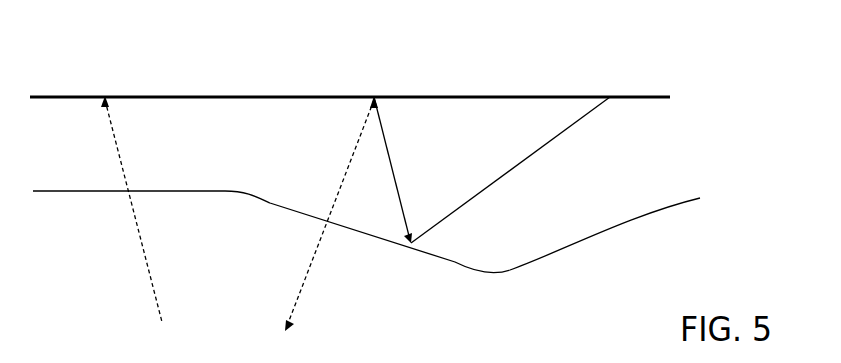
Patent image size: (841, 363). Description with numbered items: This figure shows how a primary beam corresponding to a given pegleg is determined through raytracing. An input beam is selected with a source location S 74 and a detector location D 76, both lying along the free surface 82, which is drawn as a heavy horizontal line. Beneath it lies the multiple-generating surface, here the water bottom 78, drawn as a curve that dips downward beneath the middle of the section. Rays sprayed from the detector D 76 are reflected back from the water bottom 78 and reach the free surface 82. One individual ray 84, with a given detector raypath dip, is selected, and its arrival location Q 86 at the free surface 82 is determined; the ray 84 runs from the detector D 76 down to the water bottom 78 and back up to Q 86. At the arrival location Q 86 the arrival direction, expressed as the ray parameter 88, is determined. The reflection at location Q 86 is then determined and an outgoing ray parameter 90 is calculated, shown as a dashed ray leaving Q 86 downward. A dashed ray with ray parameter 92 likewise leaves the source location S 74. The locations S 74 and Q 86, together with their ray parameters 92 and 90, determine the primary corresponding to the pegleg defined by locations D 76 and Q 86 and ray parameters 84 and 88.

The source location S 74 is at (115, 65).
The detector location D 76 is at (660, 68).
The water bottom 78 is at (82, 192).
The free surface 82 is at (502, 95).
The ray 84 is at (518, 162).
The arrival location Q 86 is at (408, 67).
The arrival ray parameter pq' 88 is at (400, 190).
The outgoing ray parameter pq 90 is at (330, 205).
The source ray parameter ps 92 is at (124, 171).